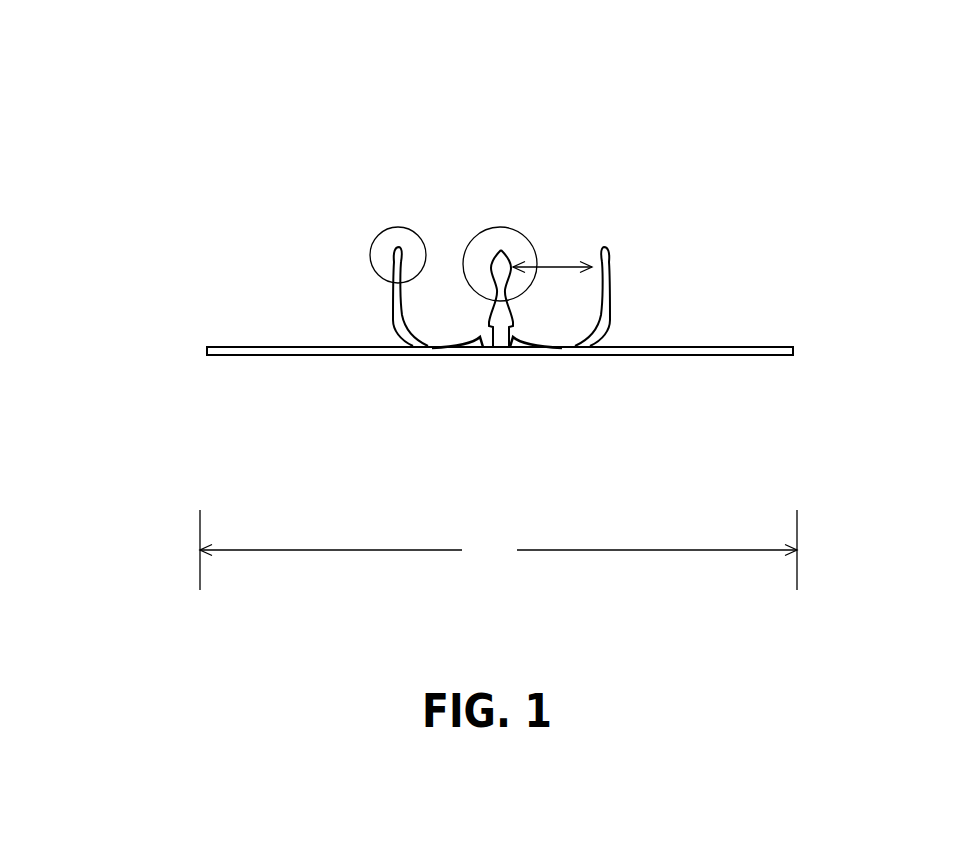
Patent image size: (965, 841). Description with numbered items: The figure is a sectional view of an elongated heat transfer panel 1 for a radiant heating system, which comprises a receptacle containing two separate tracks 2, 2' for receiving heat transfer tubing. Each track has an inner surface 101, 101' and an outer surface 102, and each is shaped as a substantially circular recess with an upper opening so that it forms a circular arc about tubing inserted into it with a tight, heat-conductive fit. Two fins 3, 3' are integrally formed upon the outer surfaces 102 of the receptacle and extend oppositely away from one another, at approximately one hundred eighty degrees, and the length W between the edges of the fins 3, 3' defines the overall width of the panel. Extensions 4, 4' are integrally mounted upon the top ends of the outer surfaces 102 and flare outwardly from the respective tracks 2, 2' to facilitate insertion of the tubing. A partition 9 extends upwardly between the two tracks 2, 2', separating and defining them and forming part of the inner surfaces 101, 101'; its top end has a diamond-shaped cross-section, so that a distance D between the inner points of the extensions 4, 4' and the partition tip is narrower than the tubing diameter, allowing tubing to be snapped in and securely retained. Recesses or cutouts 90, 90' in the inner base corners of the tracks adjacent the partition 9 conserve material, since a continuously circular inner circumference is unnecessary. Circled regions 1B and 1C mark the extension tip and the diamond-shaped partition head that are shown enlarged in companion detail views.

The heat transfer panel 1 is at (501, 265).
The left hook tip detail 1B is at (373, 238).
The central stem head detail 1C is at (496, 227).
The track 2 is at (295, 291).
The track 2' is at (656, 316).
The fin 3 is at (250, 284).
The fin 3' is at (751, 289).
The extension 4 is at (329, 174).
The extension 4' is at (708, 176).
The partition 9 is at (509, 247).
The distance D is at (542, 254).
The recess 90 is at (457, 398).
The recess 90' is at (536, 398).
The inner surface 101 is at (273, 302).
The inner surface 101' is at (622, 384).
The outer surface 102 is at (390, 323).
The length W is at (498, 550).